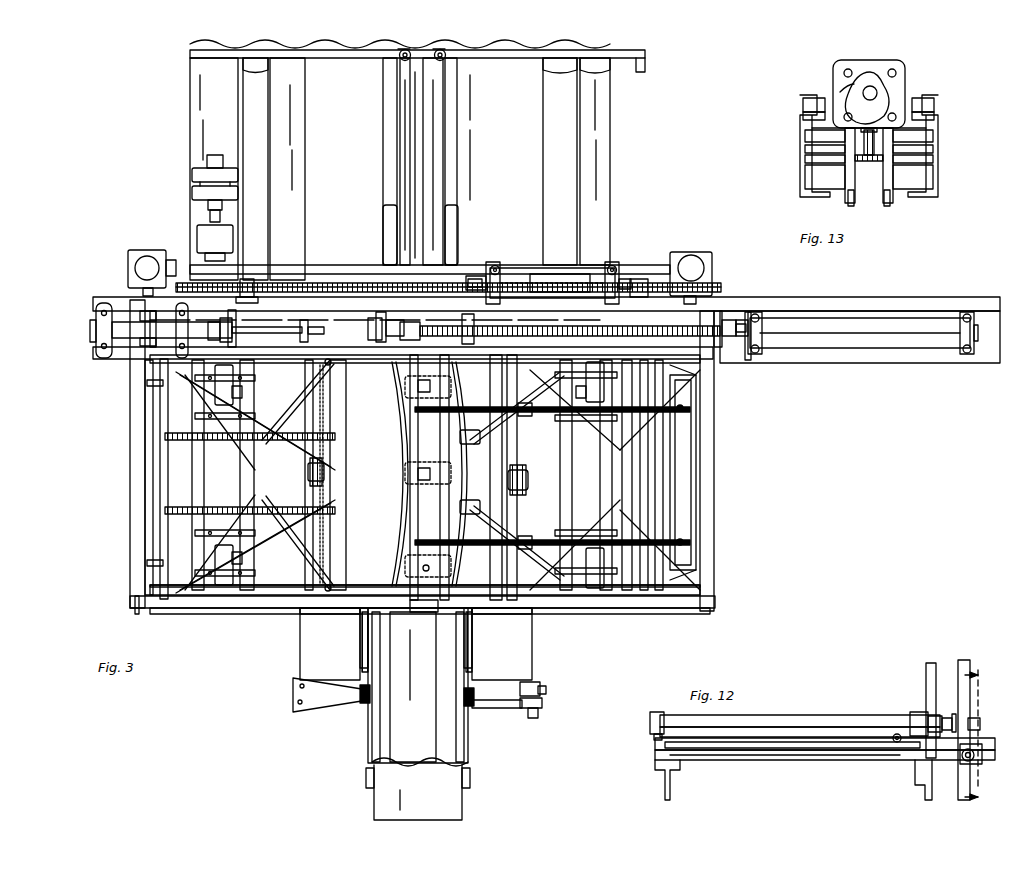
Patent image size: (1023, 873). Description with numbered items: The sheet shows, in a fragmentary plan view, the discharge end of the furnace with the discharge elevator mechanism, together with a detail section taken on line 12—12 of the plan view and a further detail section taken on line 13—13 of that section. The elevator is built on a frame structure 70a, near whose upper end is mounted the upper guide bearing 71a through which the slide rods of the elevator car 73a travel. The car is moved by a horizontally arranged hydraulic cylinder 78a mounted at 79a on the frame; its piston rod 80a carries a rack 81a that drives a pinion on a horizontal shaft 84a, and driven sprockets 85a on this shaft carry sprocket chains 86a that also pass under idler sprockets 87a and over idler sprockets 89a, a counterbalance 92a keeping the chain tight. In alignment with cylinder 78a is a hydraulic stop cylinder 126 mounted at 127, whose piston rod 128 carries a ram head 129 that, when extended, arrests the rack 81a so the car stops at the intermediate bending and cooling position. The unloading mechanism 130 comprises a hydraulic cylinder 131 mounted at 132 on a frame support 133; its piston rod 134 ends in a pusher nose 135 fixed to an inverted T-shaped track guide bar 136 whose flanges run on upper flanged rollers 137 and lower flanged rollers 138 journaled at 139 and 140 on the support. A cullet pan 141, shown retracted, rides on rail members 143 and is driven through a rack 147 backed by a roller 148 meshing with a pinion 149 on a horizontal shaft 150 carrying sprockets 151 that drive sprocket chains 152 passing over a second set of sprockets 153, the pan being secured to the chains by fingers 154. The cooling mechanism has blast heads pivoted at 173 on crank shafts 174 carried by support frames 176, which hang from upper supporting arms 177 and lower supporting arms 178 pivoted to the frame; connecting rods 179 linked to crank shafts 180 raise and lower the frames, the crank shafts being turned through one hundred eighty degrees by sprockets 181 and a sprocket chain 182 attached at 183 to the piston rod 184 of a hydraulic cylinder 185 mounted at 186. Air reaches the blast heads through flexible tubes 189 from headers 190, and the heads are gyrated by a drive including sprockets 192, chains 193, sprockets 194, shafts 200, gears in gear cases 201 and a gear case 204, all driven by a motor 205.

In FIG. 3, the section line 12— 12 is at (415, 72).
In FIG. 12, the section line 13— 13 is at (985, 736).
In FIG. 3, the frame structure 70a is at (252, 612).
In FIG. 3, the upper guide bearing 71a is at (414, 606).
In FIG. 3, the elevator car 73a is at (350, 456).
In FIG. 3, the hydraulic cylinder 78a is at (850, 328).
In FIG. 3, the cylinder mounting 79a is at (761, 312).
In FIG. 3, the piston rod 80a is at (730, 320).
In FIG. 3, the rack 81a is at (553, 324).
In FIG. 3, the horizontal shaft 84a is at (490, 490).
In FIG. 3, the driven sprockets 85a is at (396, 452).
In FIG. 3, the sprocket chains 86a is at (548, 422).
In FIG. 3, the idler sprockets 87a is at (507, 378).
In FIG. 3, the idler sprockets 89a is at (684, 412).
In FIG. 3, the counterbalance 92a is at (690, 464).
In FIG. 3, the hydraulic stop cylinder 126 is at (128, 330).
In FIG. 3, the stop cylinder mounting 127 is at (90, 328).
In FIG. 3, the piston rod 128 is at (272, 325).
In FIG. 3, the ram head 129 is at (316, 324).
In FIG. 3, the discharge elevator unloading mechanism 130 is at (454, 118).
In FIG. 13, the discharge elevator unloading mechanism 130 is at (942, 88).
In FIG. 12, the discharge elevator unloading mechanism 130 is at (856, 710).
In FIG. 3, the hydraulic cylinder 131 is at (420, 131).
In FIG. 12, the hydraulic cylinder 131 is at (736, 724).
In FIG. 3, the cylinder mounting 132 is at (407, 50).
In FIG. 13, the cylinder mounting 132 is at (914, 94).
In FIG. 12, the cylinder mounting 132 is at (660, 712).
In FIG. 3, the frame support 133 is at (442, 142).
In FIG. 13, the frame support 133 is at (940, 160).
In FIG. 12, the frame support 133 is at (760, 761).
In FIG. 3, the piston rod 134 is at (366, 334).
In FIG. 13, the piston rod 134 is at (870, 86).
In FIG. 12, the piston rod 134 is at (956, 716).
In FIG. 13, the pusher nose 135 is at (840, 90).
In FIG. 12, the pusher nose 135 is at (978, 730).
In FIG. 13, the inverted T-shaped track guide bar 136 is at (864, 160).
In FIG. 12, the inverted T-shaped track guide bar 136 is at (826, 761).
In FIG. 13, the upper flanged rollers 137 is at (806, 134).
In FIG. 12, the upper flanged rollers 137 is at (888, 760).
In FIG. 13, the lower flanged rollers 138 is at (884, 194).
In FIG. 12, the lower flanged rollers 138 is at (960, 764).
In FIG. 13, the upper roller journal 139 is at (806, 155).
In FIG. 13, the lower roller journal 140 is at (806, 182).
In FIG. 3, the cullet pan 141 is at (450, 789).
In FIG. 3, the rail members 143 is at (370, 738).
In FIG. 3, the rack 147 is at (540, 705).
In FIG. 3, the roller 148 is at (541, 686).
In FIG. 3, the pinion 149 is at (388, 524).
In FIG. 3, the horizontal shaft 150 is at (490, 699).
In FIG. 3, the sprockets 151 is at (362, 717).
In FIG. 3, the sprocket chains 152 is at (362, 643).
In FIG. 3, the sprockets 153 is at (372, 324).
In FIG. 3, the fingers 154 is at (458, 658).
In FIG. 3, the blast head pivot 173 is at (364, 608).
In FIG. 3, the crank shafts 174 is at (338, 608).
In FIG. 3, the support frames 176 is at (336, 499).
In FIG. 3, the upper supporting arms 177 is at (214, 580).
In FIG. 3, the lower supporting arms 178 is at (188, 604).
In FIG. 3, the connecting rods 179 is at (250, 380).
In FIG. 3, the crank shafts 180 is at (214, 387).
In FIG. 3, the sprocket 181 is at (244, 280).
In FIG. 3, the sprocket chain 182 is at (282, 280).
In FIG. 3, the chain attachment 183 is at (425, 268).
In FIG. 3, the piston rod 184 is at (480, 276).
In FIG. 3, the hydraulic cylinder 185 is at (550, 278).
In FIG. 3, the cylinder mounting 186 is at (612, 270).
In FIG. 3, the flexible tubes 189 is at (172, 504).
In FIG. 3, the headers 190 is at (142, 462).
In FIG. 3, the sprockets 192 is at (320, 366).
In FIG. 3, the chains 193 is at (318, 412).
In FIG. 3, the sprockets 194 is at (306, 472).
In FIG. 3, the shafts 200 is at (160, 358).
In FIG. 3, the gear cases 201 is at (146, 260).
In FIG. 3, the gear case 204 is at (194, 250).
In FIG. 3, the motor 205 is at (196, 186).